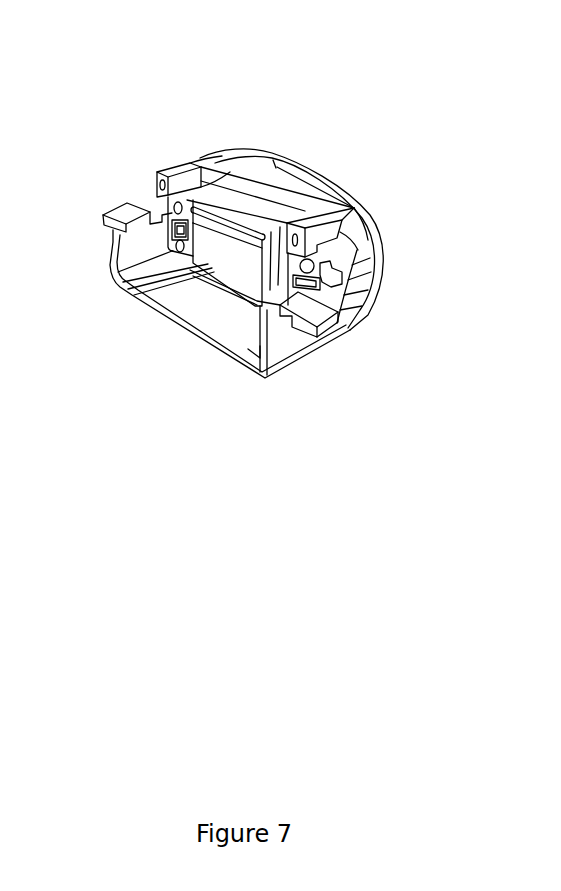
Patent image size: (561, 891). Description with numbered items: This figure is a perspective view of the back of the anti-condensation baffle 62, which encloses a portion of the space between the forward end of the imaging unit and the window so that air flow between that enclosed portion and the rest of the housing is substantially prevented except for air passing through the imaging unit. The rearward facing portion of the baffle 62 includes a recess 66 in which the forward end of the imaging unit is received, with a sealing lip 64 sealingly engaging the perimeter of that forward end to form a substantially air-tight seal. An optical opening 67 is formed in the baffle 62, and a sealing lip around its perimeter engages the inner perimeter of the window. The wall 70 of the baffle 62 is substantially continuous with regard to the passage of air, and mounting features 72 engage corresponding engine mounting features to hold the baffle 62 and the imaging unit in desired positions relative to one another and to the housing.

The baffle 62 is at (157, 135).
The sealing lip 64 is at (260, 281).
The recess 66 is at (187, 307).
The optical opening 67 is at (237, 263).
The wall 70 is at (353, 325).
The mounting features 72 is at (188, 165).